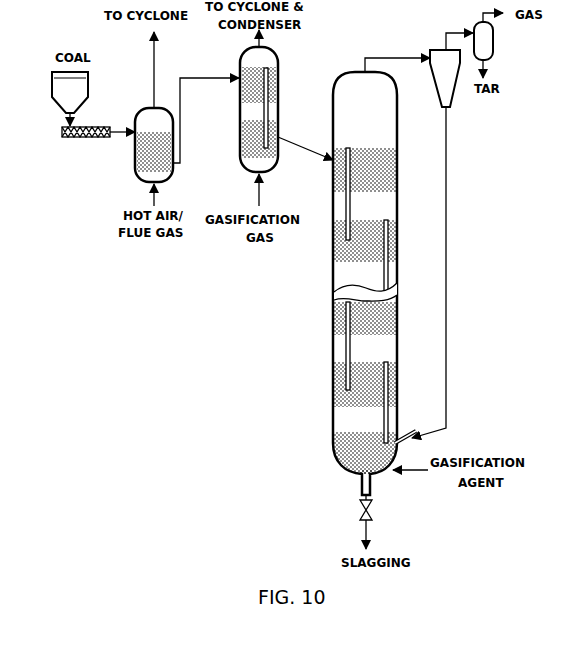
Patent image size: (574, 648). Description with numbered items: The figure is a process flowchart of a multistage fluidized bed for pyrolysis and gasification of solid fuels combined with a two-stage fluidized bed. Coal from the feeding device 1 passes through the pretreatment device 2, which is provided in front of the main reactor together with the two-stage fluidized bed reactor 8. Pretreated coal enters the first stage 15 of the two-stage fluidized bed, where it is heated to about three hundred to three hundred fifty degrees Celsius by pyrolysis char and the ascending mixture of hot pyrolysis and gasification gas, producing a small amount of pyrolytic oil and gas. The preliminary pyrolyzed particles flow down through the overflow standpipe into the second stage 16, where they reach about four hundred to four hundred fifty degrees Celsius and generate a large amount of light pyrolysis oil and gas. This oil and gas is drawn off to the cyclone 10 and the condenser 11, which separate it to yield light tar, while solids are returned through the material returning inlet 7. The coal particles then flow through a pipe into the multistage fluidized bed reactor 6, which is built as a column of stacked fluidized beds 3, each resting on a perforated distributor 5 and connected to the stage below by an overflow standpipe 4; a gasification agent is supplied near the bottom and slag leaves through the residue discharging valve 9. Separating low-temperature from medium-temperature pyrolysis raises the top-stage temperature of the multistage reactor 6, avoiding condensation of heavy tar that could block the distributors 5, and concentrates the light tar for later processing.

The feeding device 1 is at (62, 128).
The pretreatment device 2 is at (137, 112).
The fluidized beds 3 is at (338, 133).
The overflow standpipes 4 is at (268, 88).
The perforated distributors 5 is at (137, 168).
The multistage fluidized bed reactor 6 is at (335, 78).
The material returning inlet 7 is at (408, 441).
The two-stage fluidized bed reactor 8 is at (279, 57).
The residue discharging valve 9 is at (362, 514).
The cyclone 10 is at (432, 80).
The condenser 11 is at (475, 28).
The first stage of a two-stage fluidized bed reactor 15 is at (241, 65).
The second stage of a two-stage fluidized bed reactor 16 is at (241, 135).